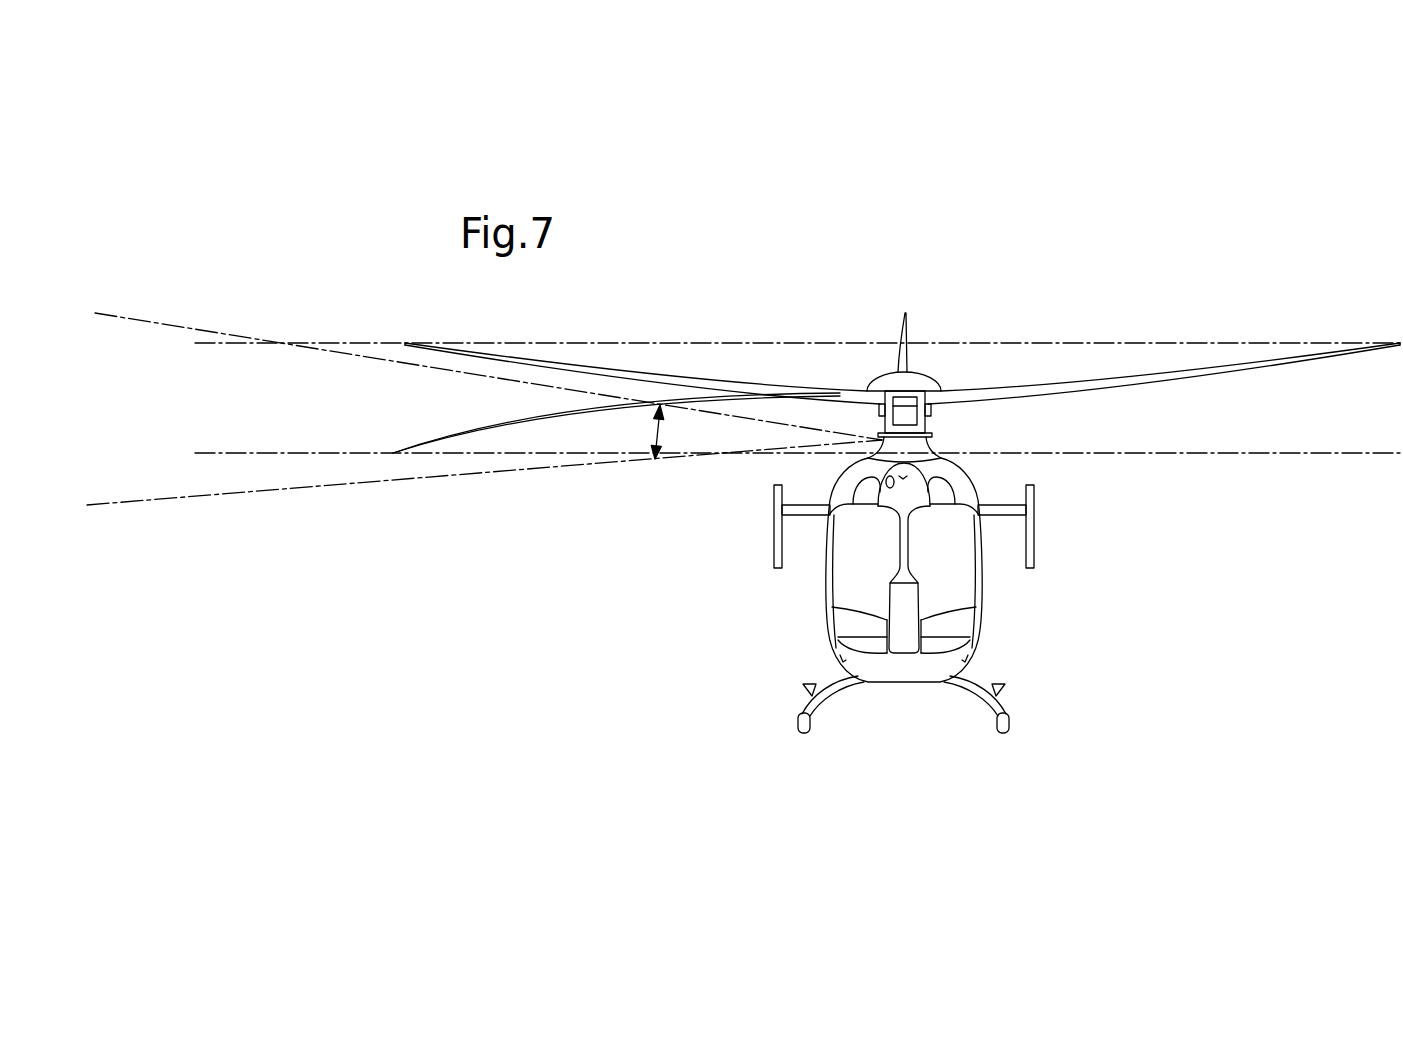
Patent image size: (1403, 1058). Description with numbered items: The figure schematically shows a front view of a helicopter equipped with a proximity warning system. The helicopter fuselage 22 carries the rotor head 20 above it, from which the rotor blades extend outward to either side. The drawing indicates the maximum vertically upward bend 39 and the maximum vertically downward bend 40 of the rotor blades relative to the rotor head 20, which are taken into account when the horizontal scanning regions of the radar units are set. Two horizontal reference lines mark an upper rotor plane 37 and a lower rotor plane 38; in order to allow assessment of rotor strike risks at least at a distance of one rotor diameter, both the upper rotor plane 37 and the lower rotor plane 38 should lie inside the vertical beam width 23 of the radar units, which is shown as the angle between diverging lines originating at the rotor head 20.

The rotor head 20 is at (890, 378).
The fuselage 22 is at (835, 650).
The vertical beam width 23 is at (655, 431).
The upper rotor plane 37 is at (981, 343).
The lower rotor plane 38 is at (1190, 455).
The vertically upward bend 39 is at (1200, 367).
The vertically downward bend 40 is at (473, 433).